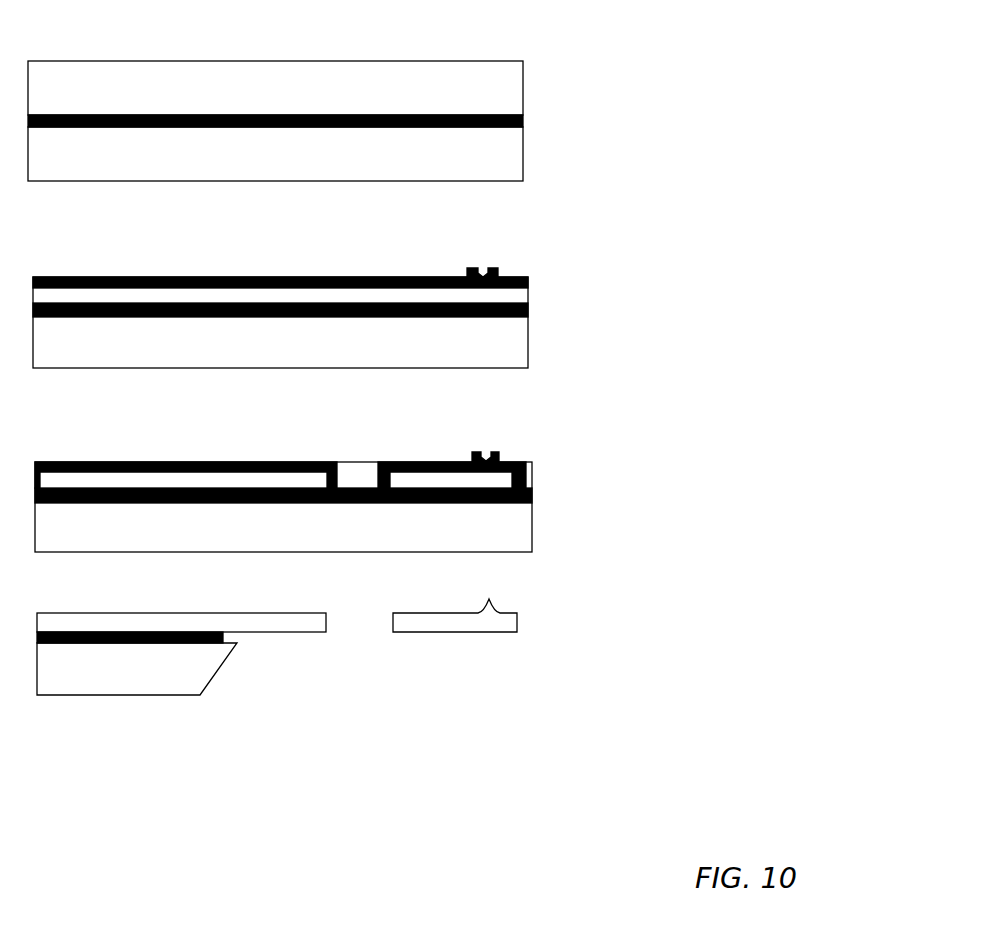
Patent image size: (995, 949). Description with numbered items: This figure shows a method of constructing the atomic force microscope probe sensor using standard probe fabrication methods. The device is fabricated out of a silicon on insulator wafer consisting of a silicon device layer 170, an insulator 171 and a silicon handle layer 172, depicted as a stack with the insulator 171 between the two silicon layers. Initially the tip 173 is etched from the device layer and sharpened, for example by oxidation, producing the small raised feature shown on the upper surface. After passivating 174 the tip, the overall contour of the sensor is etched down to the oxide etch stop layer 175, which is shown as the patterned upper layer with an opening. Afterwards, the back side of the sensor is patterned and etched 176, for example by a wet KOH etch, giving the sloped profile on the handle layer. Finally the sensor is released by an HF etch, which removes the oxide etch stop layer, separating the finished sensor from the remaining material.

The silicon device layer 170 is at (524, 83).
The insulator 171 is at (524, 120).
The silicon handle layer 172 is at (524, 150).
The tip 173 is at (483, 272).
The passivating 174 is at (528, 283).
The oxide etch stop layer 175 is at (357, 487).
The patterned and etched back side 176 is at (232, 672).